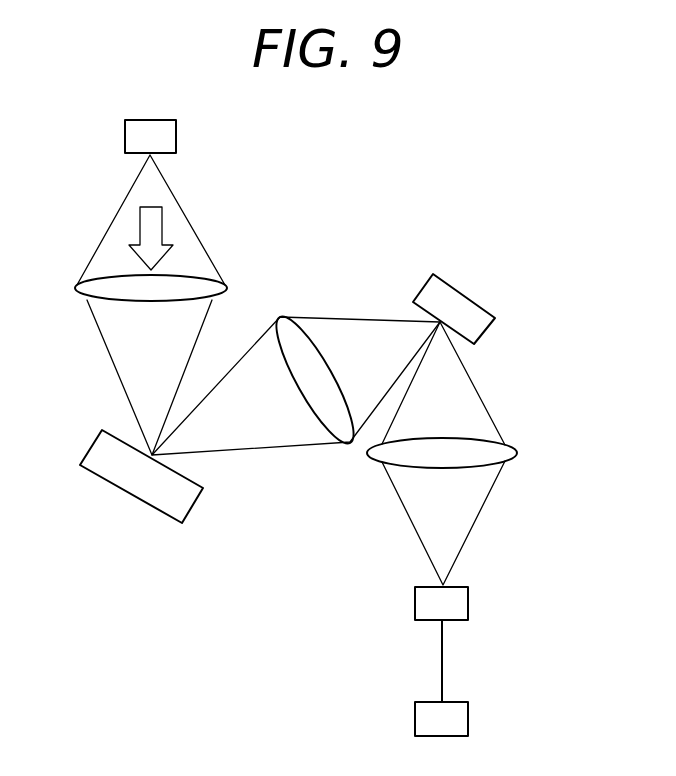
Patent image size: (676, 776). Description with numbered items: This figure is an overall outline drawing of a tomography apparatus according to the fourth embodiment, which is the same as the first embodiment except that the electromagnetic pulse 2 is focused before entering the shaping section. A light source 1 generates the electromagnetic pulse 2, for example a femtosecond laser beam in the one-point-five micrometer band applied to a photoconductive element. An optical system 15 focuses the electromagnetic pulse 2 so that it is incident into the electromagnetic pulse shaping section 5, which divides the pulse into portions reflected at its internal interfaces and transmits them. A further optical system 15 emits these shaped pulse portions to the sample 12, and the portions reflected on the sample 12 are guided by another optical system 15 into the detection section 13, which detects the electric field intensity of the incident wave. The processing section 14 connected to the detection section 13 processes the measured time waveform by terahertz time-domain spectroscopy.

The light source 1 is at (130, 133).
The electromagnetic pulse 2 is at (116, 228).
The electromagnetic pulse shaping section 5 is at (98, 446).
The sample 12 is at (458, 298).
The detection section 13 is at (462, 600).
The processing section 14 is at (462, 720).
The optical system 15 is at (335, 357).